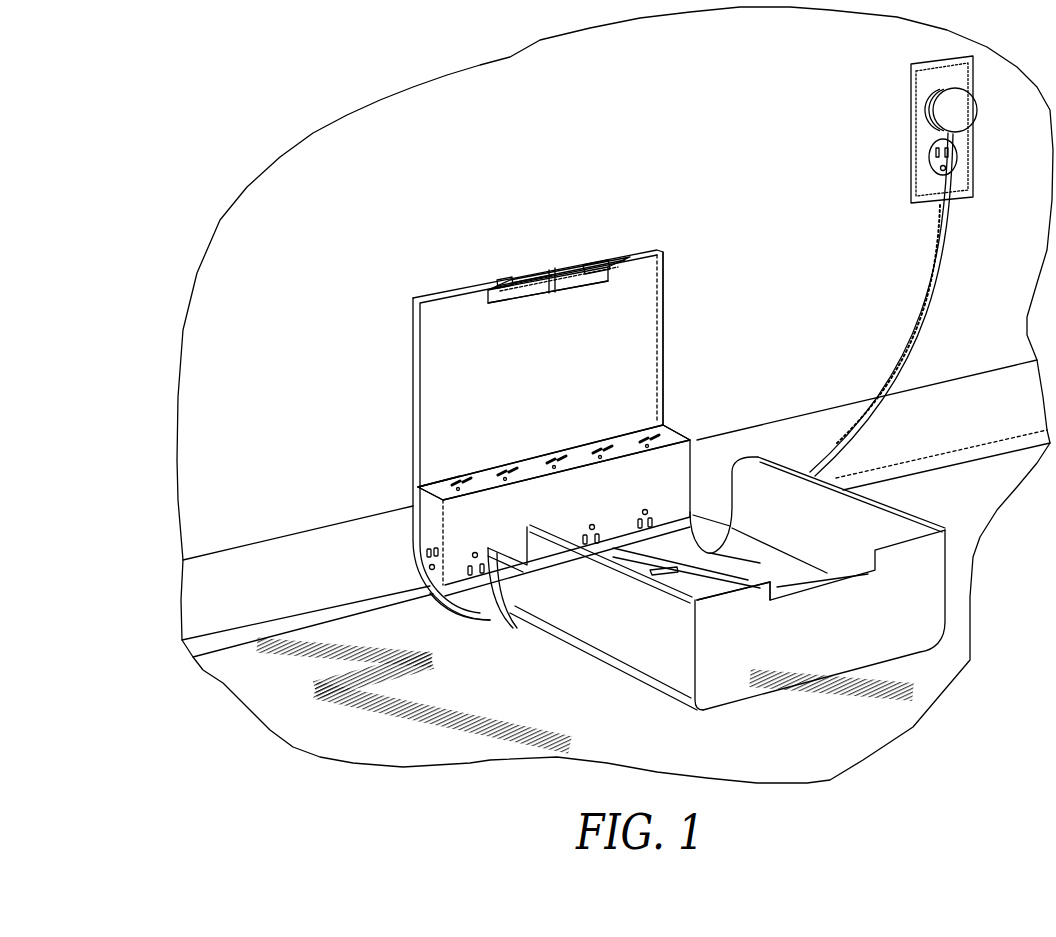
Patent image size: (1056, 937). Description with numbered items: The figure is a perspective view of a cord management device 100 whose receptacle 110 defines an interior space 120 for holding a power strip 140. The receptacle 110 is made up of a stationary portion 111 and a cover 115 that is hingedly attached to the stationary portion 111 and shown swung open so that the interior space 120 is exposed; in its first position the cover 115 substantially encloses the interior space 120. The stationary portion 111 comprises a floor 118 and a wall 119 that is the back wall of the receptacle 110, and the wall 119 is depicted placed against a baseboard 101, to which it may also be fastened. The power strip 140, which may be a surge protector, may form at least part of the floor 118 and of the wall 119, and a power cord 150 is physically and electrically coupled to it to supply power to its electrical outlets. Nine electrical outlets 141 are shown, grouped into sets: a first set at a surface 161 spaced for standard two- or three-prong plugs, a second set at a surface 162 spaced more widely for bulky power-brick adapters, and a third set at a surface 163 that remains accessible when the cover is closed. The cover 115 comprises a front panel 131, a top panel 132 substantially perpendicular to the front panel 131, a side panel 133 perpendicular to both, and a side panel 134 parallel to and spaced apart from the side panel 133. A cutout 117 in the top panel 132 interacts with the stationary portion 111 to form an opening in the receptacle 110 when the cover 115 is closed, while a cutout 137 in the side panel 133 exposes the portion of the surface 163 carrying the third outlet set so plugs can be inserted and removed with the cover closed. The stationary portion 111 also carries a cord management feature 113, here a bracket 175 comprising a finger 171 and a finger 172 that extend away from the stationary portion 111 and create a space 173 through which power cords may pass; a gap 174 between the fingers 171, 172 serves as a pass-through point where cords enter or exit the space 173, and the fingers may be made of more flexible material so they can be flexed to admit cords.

The cord management device 100 is at (637, 247).
The baseboard 101 is at (253, 610).
The receptacle 110 is at (701, 461).
The stationary portion 111 is at (407, 368).
The cord management feature 113 is at (522, 307).
The cover 115 is at (850, 483).
The cutout 117 is at (775, 600).
The floor 118 is at (475, 604).
The wall 119 is at (650, 273).
The interior space 120 is at (760, 502).
The front panel 131 is at (702, 580).
The top panel 132 is at (723, 690).
The side panel 133 is at (660, 657).
The side panel 134 is at (857, 543).
The cutout 137 is at (500, 597).
The power strip 140 is at (433, 483).
The electrical outlet 141 is at (462, 482).
The power cord 150 is at (923, 300).
The surface 161 is at (623, 443).
The surface 162 is at (697, 445).
The surface 163 is at (433, 503).
The finger 171 is at (538, 272).
The finger 172 is at (597, 267).
The space 173 is at (503, 280).
The gap 174 is at (558, 299).
The bracket 175 is at (452, 212).